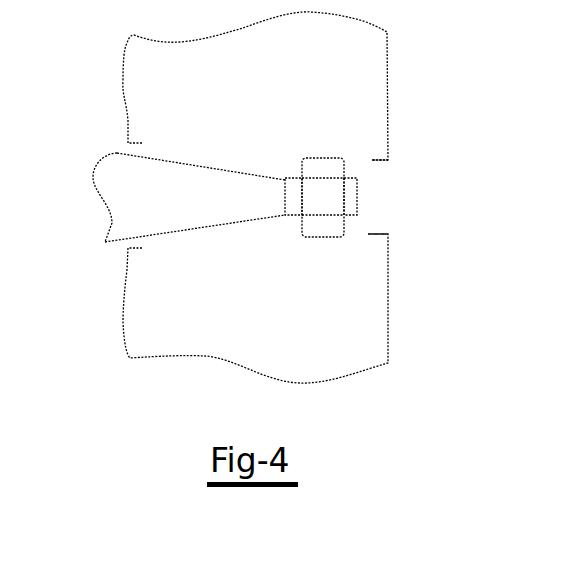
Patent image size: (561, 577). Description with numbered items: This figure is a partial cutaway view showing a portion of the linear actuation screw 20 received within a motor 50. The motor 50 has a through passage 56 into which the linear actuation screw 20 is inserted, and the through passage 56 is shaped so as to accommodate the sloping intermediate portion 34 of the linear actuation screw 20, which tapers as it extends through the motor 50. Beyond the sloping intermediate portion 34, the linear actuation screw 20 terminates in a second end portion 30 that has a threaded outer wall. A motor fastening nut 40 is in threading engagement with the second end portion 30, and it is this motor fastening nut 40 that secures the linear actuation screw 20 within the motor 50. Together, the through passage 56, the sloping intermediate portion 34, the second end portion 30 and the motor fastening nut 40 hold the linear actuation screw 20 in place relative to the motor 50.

The linear actuation screw 20 is at (136, 220).
The second end portion 30 is at (292, 200).
The sloping intermediate portion 34 is at (115, 152).
The motor fastening nut 40 is at (344, 197).
The motor 50 is at (360, 72).
The through passage 56 is at (380, 180).